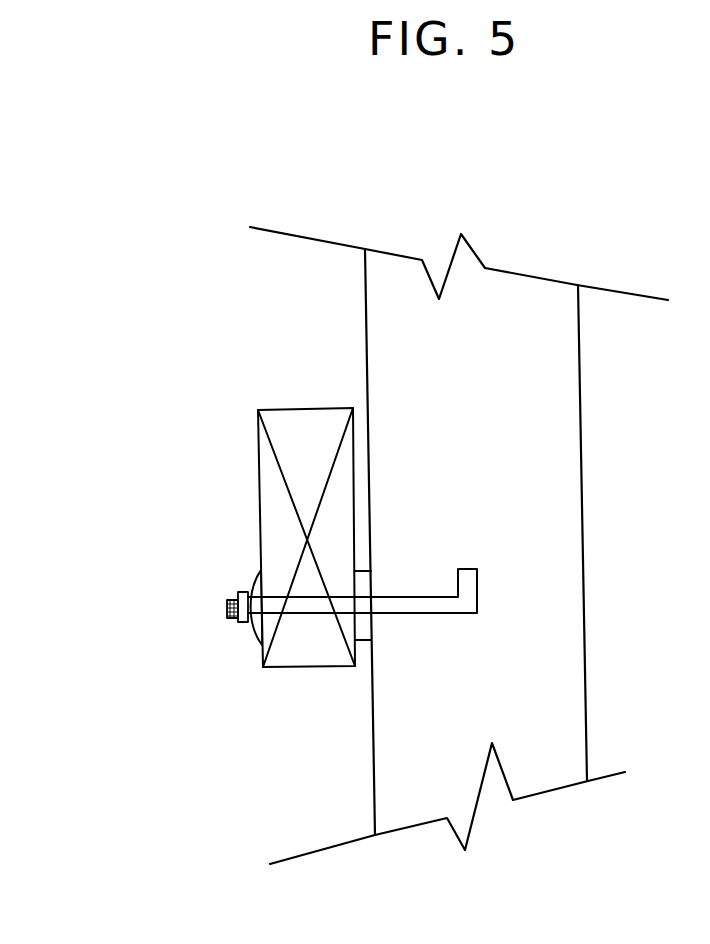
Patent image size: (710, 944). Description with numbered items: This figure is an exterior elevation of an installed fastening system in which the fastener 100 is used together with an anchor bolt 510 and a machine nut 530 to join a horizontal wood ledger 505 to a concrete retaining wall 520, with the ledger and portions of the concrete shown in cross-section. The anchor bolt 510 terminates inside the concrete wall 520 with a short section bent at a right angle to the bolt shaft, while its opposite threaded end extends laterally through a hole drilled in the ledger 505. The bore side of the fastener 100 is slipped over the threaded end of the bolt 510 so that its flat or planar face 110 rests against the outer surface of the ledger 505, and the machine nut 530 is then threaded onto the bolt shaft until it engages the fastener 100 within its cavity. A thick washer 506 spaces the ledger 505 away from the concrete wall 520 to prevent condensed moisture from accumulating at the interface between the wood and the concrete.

The fastener 100 is at (252, 578).
The flat or planar face 110 is at (262, 572).
The ledger 505 is at (275, 400).
The thick washer 506 is at (362, 648).
The anchor bolt 510 is at (427, 580).
The concrete retaining wall 520 is at (540, 682).
The machine nut 530 is at (240, 626).